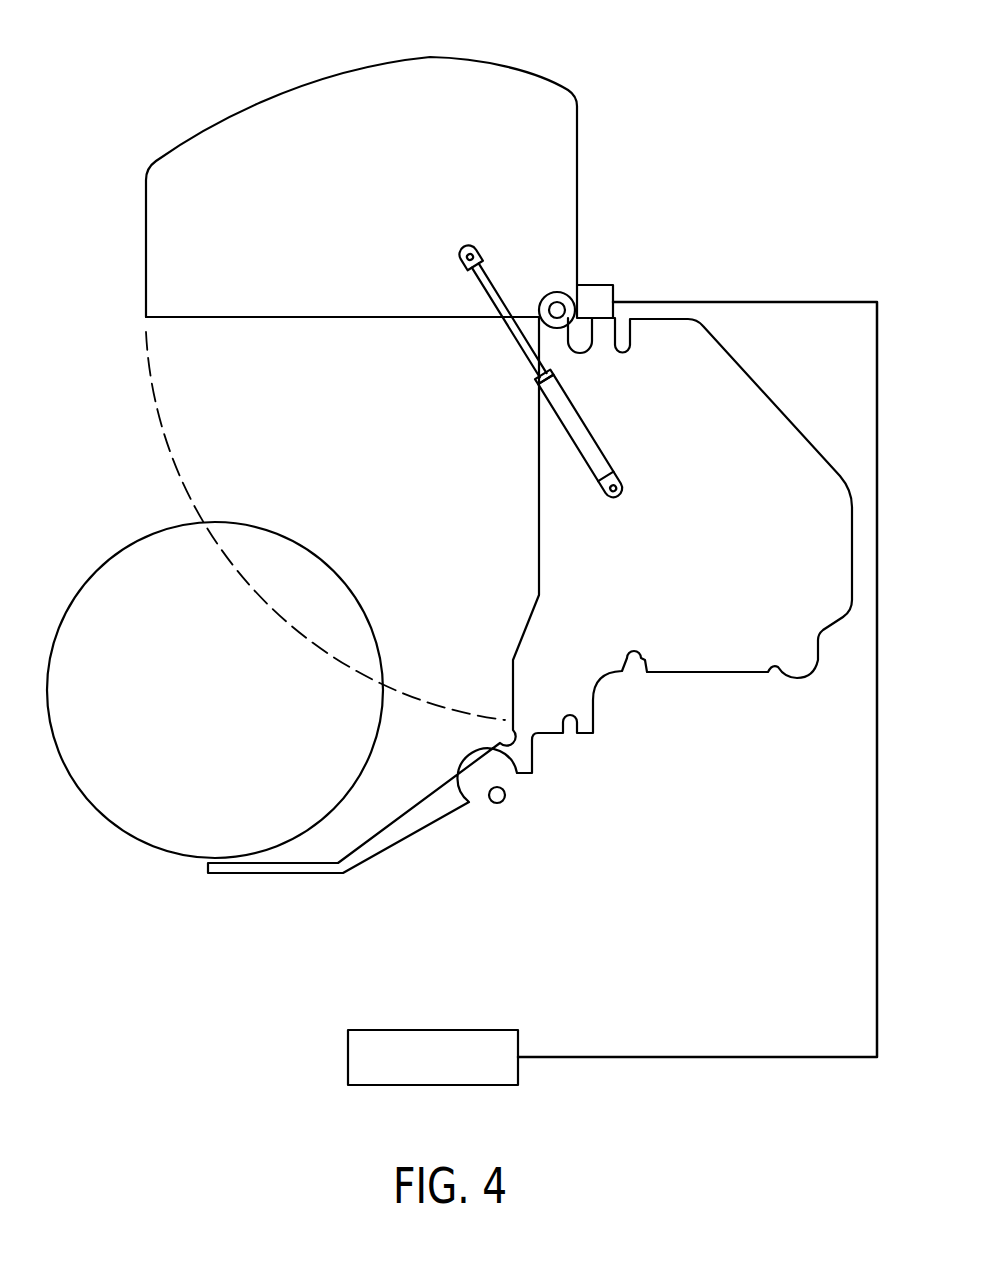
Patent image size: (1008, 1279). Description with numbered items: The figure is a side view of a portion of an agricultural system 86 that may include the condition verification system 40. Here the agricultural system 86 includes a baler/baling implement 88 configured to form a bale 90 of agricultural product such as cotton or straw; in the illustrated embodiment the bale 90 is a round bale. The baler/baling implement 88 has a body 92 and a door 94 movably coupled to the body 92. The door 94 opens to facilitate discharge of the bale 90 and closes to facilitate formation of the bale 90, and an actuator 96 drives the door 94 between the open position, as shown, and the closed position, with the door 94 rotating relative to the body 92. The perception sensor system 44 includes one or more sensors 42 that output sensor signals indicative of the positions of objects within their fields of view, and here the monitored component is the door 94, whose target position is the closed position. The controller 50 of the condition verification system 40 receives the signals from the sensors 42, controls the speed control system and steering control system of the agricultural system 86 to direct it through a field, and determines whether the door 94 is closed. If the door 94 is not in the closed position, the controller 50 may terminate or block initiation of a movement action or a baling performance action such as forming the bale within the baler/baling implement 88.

The condition verification system 40 is at (444, 1001).
The sensor 42 is at (604, 284).
The perception sensor system 44 is at (592, 253).
The controller 50 is at (518, 1070).
The agricultural system 86 is at (630, 142).
The baler/baling implement 88 is at (741, 355).
The bale 90 is at (90, 577).
The body 92 is at (791, 433).
The door 94 is at (461, 57).
The actuator 96 is at (517, 337).